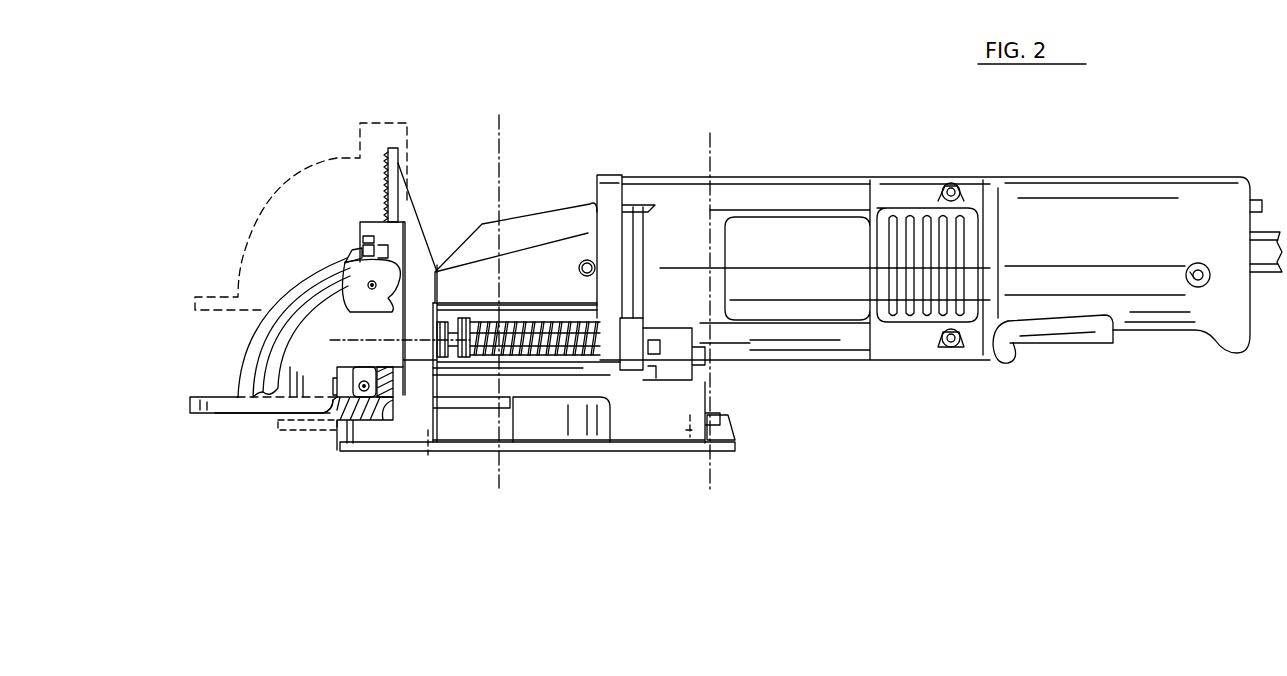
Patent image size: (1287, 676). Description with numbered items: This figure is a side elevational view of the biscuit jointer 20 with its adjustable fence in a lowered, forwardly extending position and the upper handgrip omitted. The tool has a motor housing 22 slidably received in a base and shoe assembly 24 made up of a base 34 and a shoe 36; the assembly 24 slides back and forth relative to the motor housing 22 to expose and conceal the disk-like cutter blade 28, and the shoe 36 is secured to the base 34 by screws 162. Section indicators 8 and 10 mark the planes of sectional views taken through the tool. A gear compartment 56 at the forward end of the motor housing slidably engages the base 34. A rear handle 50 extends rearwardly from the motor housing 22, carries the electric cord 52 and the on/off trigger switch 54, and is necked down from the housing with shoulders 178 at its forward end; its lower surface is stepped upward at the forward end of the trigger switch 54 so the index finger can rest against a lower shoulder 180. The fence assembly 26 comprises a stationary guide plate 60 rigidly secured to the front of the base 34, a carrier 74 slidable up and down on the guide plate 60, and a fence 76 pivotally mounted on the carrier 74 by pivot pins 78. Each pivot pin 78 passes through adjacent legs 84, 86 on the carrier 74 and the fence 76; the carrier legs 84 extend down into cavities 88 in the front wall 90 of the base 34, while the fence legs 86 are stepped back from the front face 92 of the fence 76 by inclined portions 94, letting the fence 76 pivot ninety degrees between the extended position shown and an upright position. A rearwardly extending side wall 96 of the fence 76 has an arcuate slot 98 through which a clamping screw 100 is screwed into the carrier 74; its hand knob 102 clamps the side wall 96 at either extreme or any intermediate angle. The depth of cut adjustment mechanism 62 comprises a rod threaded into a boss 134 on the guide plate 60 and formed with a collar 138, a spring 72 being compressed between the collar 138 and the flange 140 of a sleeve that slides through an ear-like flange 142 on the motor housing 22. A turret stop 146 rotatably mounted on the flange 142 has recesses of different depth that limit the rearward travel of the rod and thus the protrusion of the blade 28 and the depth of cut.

The section line 8- 8 is at (538, 488).
The section line 10- 10 is at (672, 493).
The biscuit jointer 20 is at (812, 140).
The motor housing 22 is at (842, 198).
The base and shoe assembly 24 is at (737, 418).
The fence assembly 26 is at (227, 448).
The cutter blade 28 is at (310, 433).
The base 34 is at (485, 427).
The shoe 36 is at (577, 447).
The rear handle 50 is at (1150, 210).
The electric cord 52 is at (1272, 275).
The on/off trigger switch 54 is at (1060, 328).
The gear compartment 56 is at (535, 270).
The guide plate 60 is at (402, 200).
The depth of cut adjustment mechanism 62 is at (568, 362).
The spring 72 is at (558, 303).
The carrier 74 is at (370, 227).
The fence 76 is at (212, 410).
The pivot pins 78 is at (363, 380).
The carrier legs 84 is at (365, 397).
The fence legs 86 is at (333, 383).
The cavities 88 is at (388, 378).
The front wall 90 is at (335, 432).
The front face 92 is at (252, 415).
The inclined portions 94 is at (327, 410).
The side wall 96 is at (238, 360).
The arcuate slot 98 is at (305, 303).
The clamping screw 100 is at (376, 283).
The hand knob 102 is at (338, 268).
The boss 134 is at (413, 342).
The collar 138 is at (468, 322).
The flange 140 is at (615, 320).
The ear-like flange 142 is at (632, 358).
The turret stop 146 is at (700, 337).
The screws 162 is at (430, 455).
The shoulders 178 is at (992, 205).
The lower shoulder 180 is at (1013, 350).